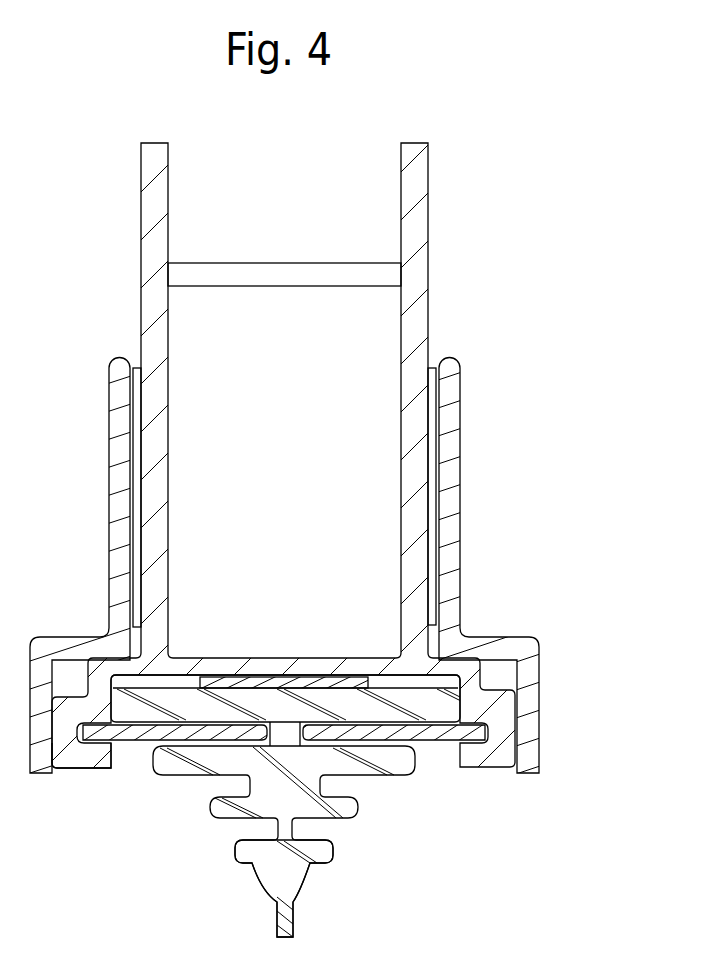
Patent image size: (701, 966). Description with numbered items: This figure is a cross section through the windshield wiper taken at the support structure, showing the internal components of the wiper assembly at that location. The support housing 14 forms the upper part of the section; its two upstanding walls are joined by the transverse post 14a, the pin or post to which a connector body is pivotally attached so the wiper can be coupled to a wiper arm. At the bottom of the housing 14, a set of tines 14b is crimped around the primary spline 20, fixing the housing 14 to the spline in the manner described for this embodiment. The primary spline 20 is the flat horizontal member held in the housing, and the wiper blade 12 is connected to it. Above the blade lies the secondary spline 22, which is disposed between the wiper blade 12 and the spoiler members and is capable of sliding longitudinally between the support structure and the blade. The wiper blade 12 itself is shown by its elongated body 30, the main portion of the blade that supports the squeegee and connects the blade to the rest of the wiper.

The wiper blade 12 is at (245, 852).
The support housing 14 is at (498, 707).
The transverse post 14a is at (304, 268).
The tines 14b is at (88, 758).
The primary spline 20 is at (433, 733).
The secondary spline 22 is at (278, 682).
The elongated body 30 is at (403, 702).